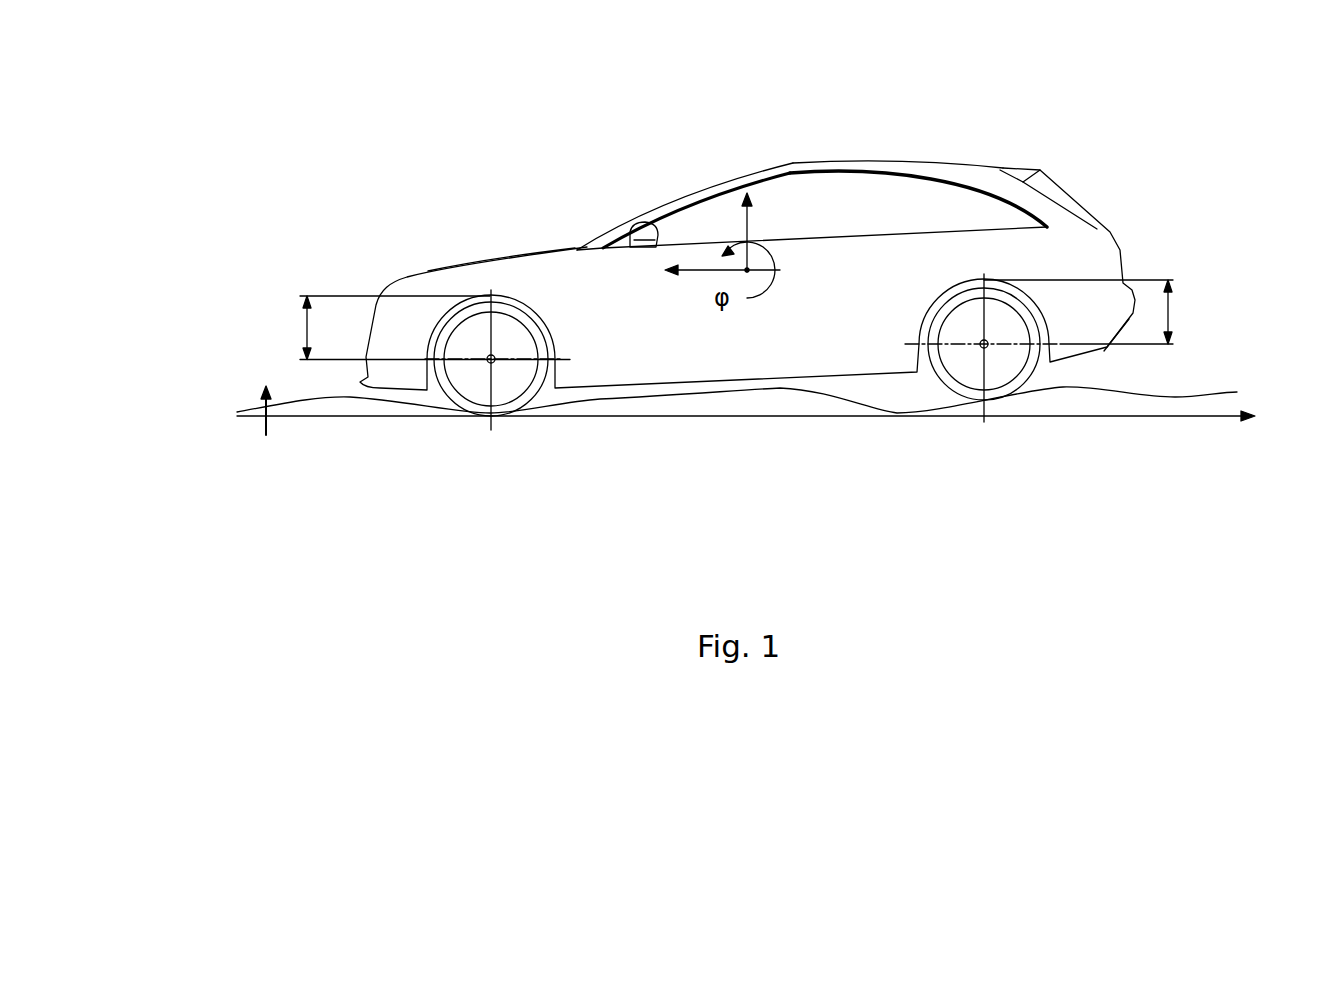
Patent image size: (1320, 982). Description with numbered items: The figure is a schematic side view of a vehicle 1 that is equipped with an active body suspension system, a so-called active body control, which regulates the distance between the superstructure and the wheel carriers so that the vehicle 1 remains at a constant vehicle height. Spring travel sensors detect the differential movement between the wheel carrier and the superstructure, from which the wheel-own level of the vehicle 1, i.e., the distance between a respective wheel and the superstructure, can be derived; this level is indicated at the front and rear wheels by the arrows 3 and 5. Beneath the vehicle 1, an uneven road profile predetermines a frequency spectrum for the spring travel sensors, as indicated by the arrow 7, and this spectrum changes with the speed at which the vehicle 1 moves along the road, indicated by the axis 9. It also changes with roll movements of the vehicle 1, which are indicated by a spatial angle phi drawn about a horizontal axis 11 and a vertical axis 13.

The vehicle 1 is at (1005, 168).
The arrow 3 is at (1170, 310).
The arrow 5 is at (307, 328).
The arrow 7 is at (263, 422).
The axis 9 is at (1158, 418).
The horizontal axis 11 is at (692, 274).
The vertical axis 13 is at (750, 217).